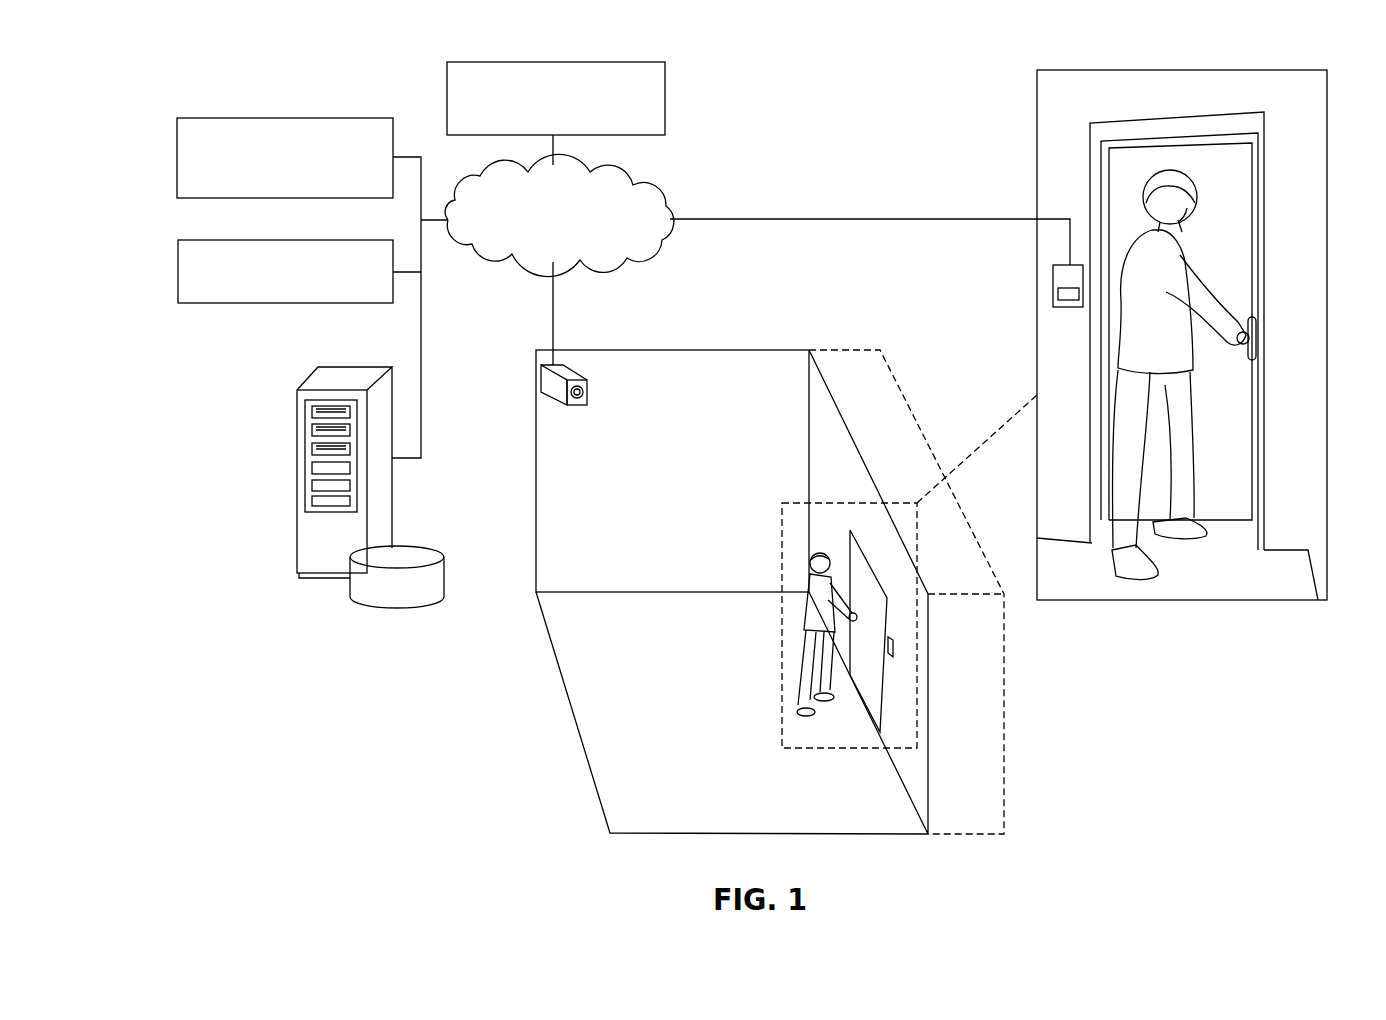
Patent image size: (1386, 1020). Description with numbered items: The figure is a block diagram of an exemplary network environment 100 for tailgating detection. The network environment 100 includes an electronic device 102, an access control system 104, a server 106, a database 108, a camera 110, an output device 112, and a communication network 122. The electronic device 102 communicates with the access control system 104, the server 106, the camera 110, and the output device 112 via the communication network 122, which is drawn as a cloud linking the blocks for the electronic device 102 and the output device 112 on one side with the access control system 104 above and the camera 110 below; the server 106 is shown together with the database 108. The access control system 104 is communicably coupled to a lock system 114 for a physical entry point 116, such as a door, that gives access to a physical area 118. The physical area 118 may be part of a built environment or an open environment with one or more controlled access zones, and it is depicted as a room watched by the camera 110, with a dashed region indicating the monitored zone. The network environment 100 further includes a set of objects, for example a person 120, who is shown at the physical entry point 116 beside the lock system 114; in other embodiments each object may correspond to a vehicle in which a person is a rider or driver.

The network environment 100 is at (207, 82).
The electronic device 102 is at (303, 181).
The access control system 104 is at (610, 121).
The server 106 is at (297, 432).
The database 108 is at (375, 597).
The camera 110 is at (550, 383).
The output device 112 is at (303, 295).
The lock system 114 is at (1057, 282).
The physical entry point 116 is at (1123, 210).
The physical area 118 is at (843, 363).
The person 120 is at (1168, 189).
The communication network 122 is at (618, 240).